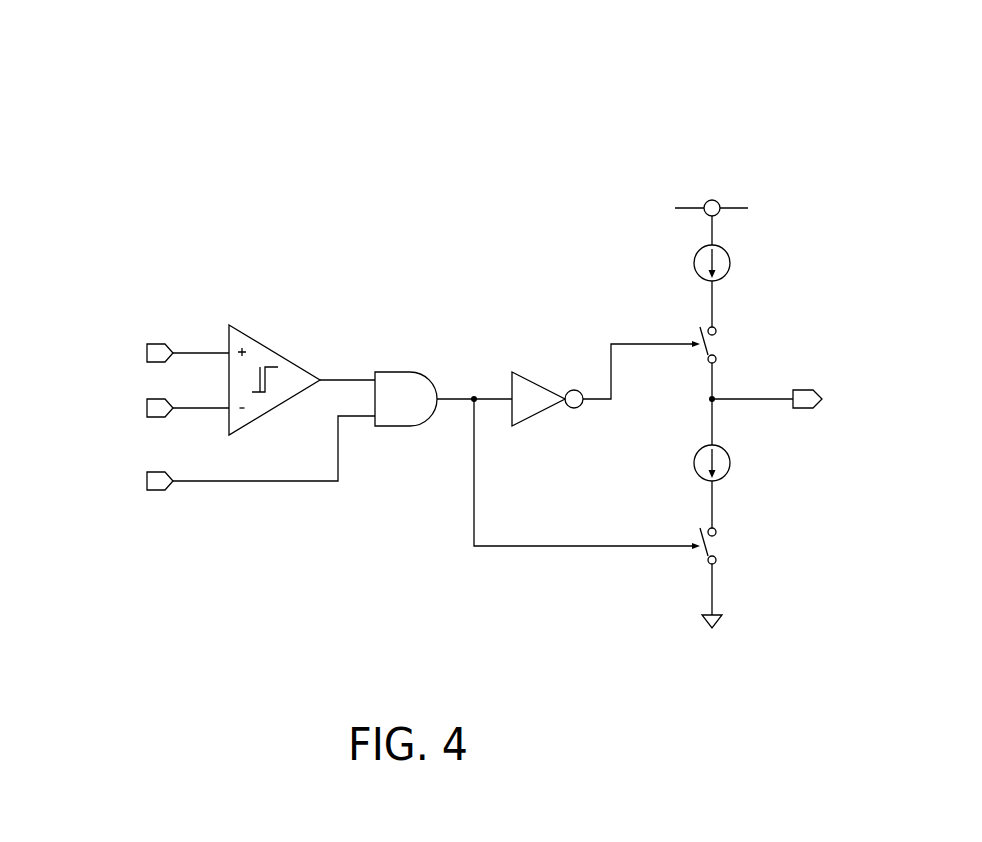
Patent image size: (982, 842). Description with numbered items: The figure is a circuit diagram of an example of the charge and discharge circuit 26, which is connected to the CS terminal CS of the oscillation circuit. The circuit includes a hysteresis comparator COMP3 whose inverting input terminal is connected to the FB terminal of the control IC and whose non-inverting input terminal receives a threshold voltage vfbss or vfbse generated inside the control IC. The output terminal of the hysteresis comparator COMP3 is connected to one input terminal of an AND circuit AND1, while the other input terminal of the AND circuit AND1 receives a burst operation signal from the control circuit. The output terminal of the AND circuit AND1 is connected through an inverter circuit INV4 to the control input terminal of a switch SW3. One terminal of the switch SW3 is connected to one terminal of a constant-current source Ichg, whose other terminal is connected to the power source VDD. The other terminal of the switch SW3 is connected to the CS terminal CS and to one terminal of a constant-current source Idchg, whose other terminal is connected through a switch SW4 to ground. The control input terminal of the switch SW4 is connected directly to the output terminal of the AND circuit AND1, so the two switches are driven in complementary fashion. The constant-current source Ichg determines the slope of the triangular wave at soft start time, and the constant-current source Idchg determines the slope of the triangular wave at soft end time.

The charge and discharge circuit 26 is at (556, 206).
The hysteresis comparator COMP3 is at (274, 362).
The AND circuit AND1 is at (406, 382).
The inverter circuit INV4 is at (547, 382).
The switch SW3 is at (682, 338).
The switch SW4 is at (682, 539).
The constant-current source Ichg is at (735, 263).
The constant-current source Idchg is at (740, 463).
The power source VDD is at (711, 196).
The CS terminal CS is at (824, 401).